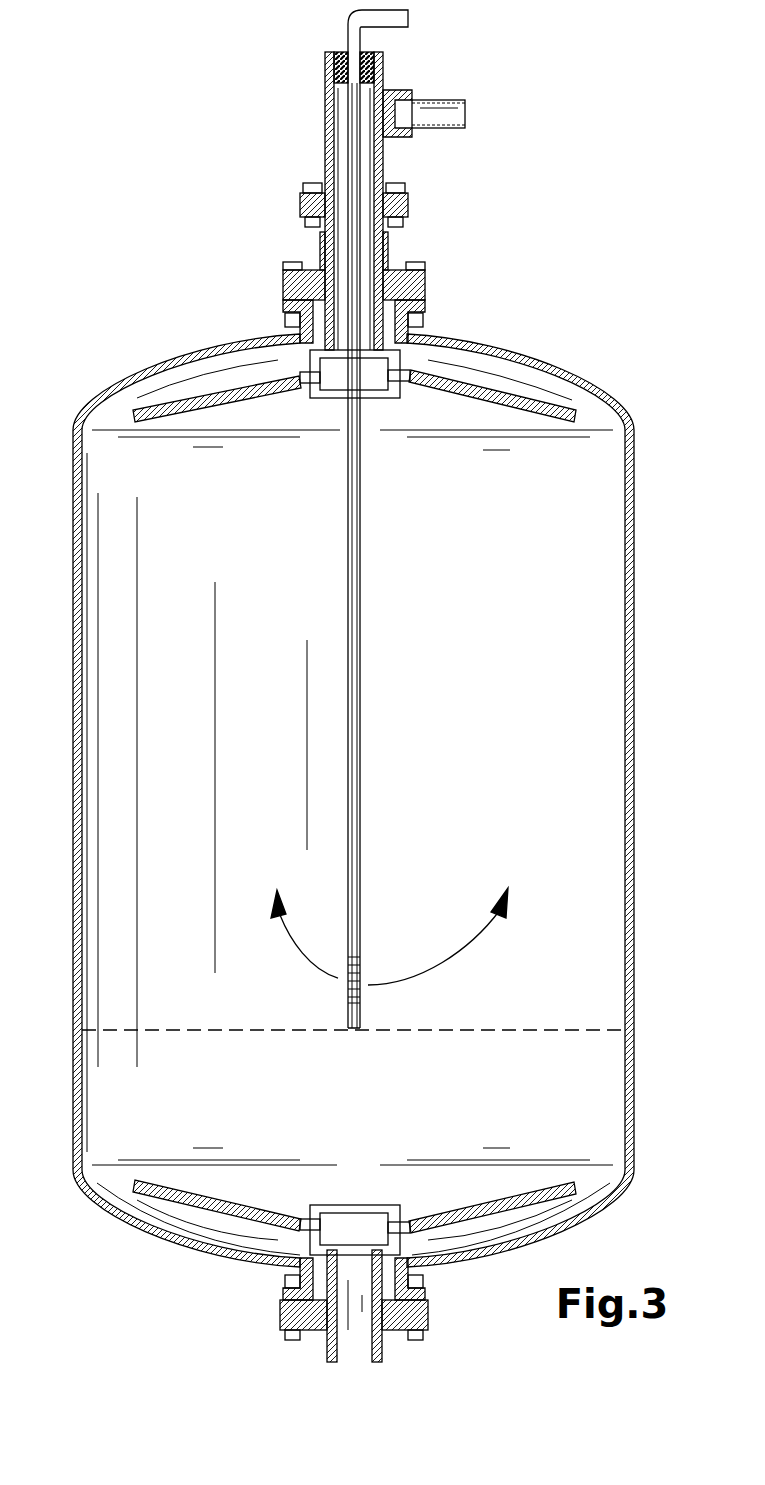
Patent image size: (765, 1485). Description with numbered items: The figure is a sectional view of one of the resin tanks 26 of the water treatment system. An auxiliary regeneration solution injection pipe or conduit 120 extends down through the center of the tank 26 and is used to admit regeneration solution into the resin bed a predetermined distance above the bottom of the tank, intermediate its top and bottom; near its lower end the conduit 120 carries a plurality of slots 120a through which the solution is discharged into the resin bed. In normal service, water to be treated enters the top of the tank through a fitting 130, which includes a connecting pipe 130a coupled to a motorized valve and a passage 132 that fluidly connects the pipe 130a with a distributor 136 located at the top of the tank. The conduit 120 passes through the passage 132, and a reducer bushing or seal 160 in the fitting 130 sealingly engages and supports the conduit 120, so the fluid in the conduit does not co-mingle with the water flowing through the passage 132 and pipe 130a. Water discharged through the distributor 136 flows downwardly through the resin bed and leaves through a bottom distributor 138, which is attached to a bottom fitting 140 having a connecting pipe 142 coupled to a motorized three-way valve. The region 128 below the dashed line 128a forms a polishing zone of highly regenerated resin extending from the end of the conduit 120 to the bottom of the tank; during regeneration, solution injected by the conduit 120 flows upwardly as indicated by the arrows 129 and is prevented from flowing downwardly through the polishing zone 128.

The tank 26 is at (587, 385).
The auxiliary regeneration solution injection conduit 120 is at (352, 697).
The slots 120a is at (362, 972).
The polishing zone 128 is at (278, 1114).
The dashed line 128a is at (237, 1028).
The arrows 129 is at (283, 932).
The fitting 130 is at (500, 185).
The connecting pipe 130a is at (452, 100).
The passage 132 is at (367, 265).
The distributor 136 is at (523, 413).
The distributor 138 is at (472, 1203).
The fitting 140 is at (447, 1304).
The connecting pipe 142 is at (327, 1355).
The reducer bushing or seal 160 is at (347, 52).